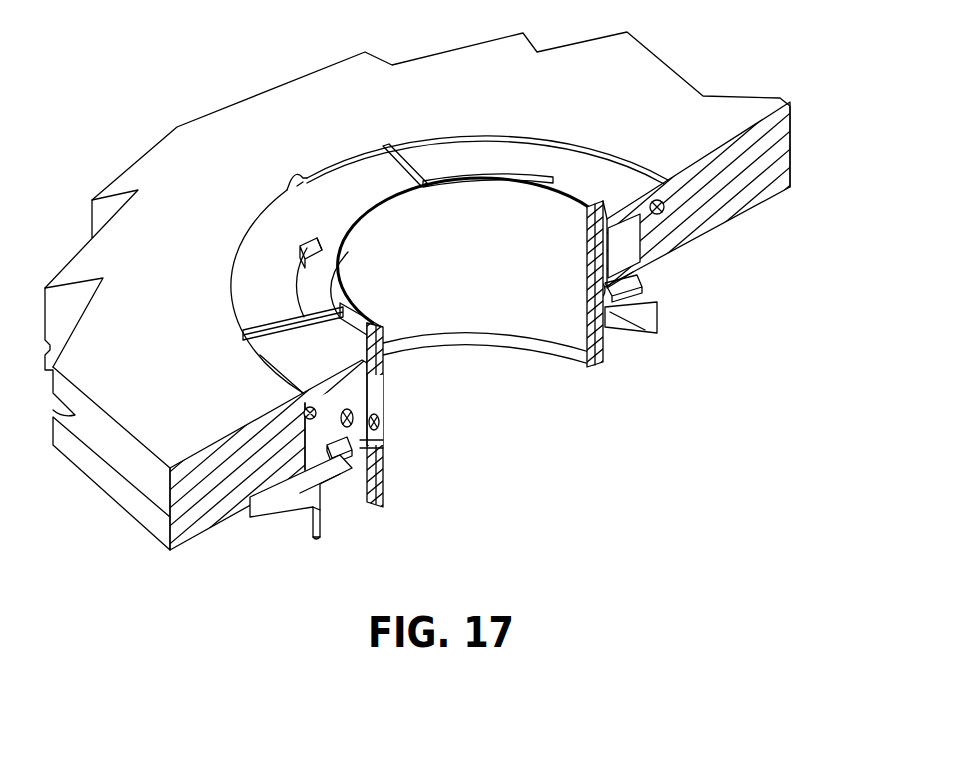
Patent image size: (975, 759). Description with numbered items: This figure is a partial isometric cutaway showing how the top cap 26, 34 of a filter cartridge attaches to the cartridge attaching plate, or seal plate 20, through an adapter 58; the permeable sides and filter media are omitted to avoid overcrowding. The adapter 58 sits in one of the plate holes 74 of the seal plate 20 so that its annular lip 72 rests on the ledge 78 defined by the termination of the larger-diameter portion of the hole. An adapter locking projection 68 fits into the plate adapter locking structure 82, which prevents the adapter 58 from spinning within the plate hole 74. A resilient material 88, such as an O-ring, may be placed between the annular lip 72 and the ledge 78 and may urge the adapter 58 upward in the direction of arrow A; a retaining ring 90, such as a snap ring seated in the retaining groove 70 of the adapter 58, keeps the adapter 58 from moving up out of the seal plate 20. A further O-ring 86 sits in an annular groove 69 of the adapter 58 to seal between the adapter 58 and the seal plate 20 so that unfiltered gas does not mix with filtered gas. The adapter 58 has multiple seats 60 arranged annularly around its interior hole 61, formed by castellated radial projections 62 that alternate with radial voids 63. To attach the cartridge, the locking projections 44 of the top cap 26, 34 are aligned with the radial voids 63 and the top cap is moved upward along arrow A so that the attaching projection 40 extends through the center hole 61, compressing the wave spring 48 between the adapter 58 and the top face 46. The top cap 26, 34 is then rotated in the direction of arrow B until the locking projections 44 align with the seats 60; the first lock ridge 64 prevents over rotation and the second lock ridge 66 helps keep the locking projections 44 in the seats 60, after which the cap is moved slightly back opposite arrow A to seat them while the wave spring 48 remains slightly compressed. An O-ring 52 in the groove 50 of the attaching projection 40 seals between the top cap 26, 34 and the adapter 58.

The cartridge attaching plate 20 is at (237, 115).
The top cap 26 is at (385, 484).
The top cap 34 is at (385, 484).
The attaching projection 40 is at (437, 212).
The locking projections 44 is at (325, 288).
The top face 46 is at (327, 484).
The wave spring 48 is at (372, 488).
The groove 50 is at (384, 430).
The O-ring 52 is at (378, 417).
The adapter 58 is at (297, 209).
The seats 60 is at (308, 260).
The interior hole 61 is at (375, 179).
The radial projections 62 is at (330, 333).
The radial void 63 is at (361, 349).
The first lock ridge 64 is at (240, 332).
The second lock ridge 66 is at (313, 246).
The adapter locking projection 68 is at (300, 183).
The annular groove 69 is at (383, 448).
The retaining groove 70 is at (383, 468).
The annular lip 72 is at (665, 192).
The plate holes 74 is at (488, 364).
The ledge 78 is at (662, 226).
The plate adapter locking structure 82 is at (292, 175).
The O-ring 86 is at (388, 400).
The resilient material 88 is at (303, 411).
The retaining ring 90 is at (305, 494).
The arrow A is at (523, 236).
The arrow B is at (403, 294).